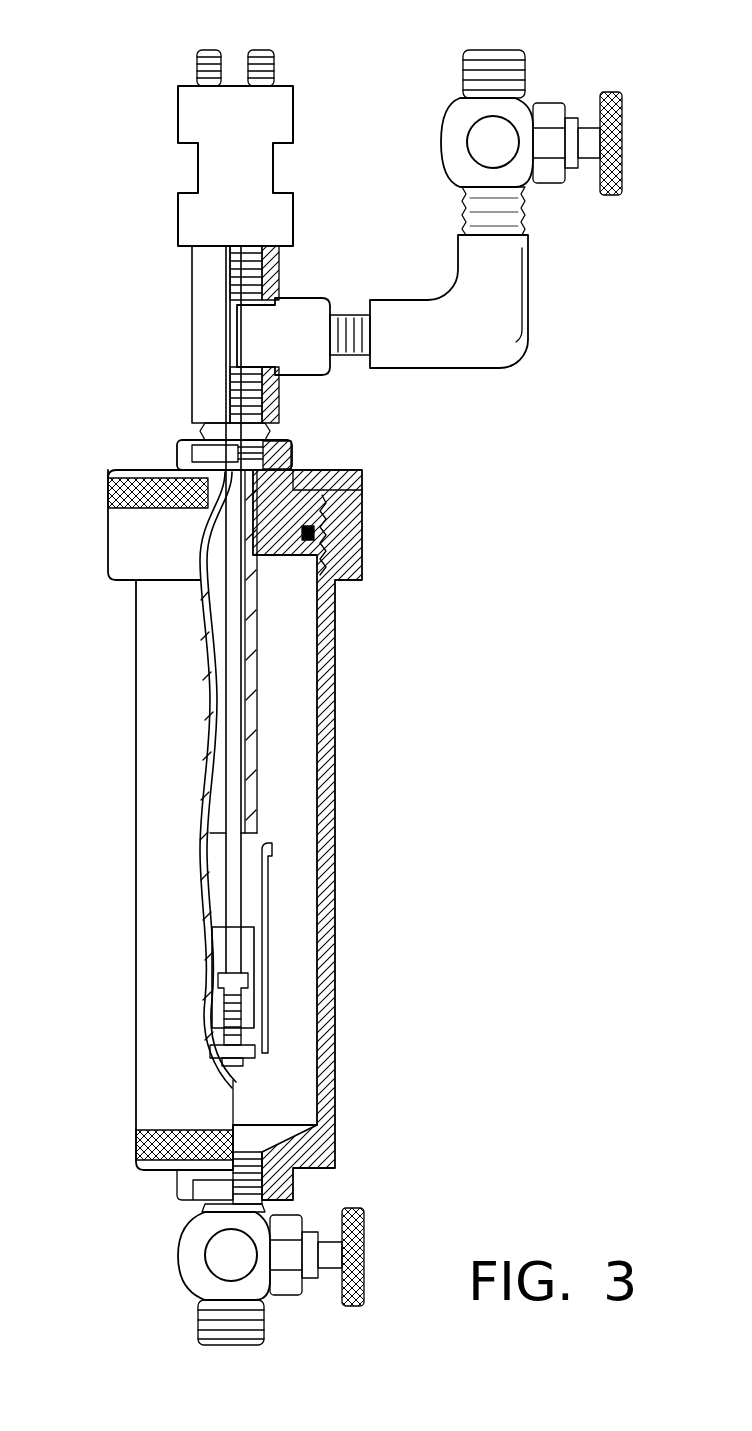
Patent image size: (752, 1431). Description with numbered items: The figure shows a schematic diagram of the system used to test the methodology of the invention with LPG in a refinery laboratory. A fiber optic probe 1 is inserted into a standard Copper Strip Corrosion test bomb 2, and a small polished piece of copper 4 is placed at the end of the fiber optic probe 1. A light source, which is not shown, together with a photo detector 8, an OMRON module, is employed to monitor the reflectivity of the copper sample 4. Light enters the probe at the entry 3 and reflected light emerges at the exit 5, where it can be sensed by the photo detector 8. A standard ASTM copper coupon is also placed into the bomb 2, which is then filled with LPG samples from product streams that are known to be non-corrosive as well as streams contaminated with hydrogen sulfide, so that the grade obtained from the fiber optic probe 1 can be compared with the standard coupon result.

The fiber optic probe 1 is at (232, 735).
The Copper Strip Corrosion test bomb 2 is at (136, 748).
The light entry 3 is at (258, 50).
The polished piece of copper 4 is at (233, 950).
The reflected light exit 5 is at (213, 50).
The photo detector 8 is at (268, 912).